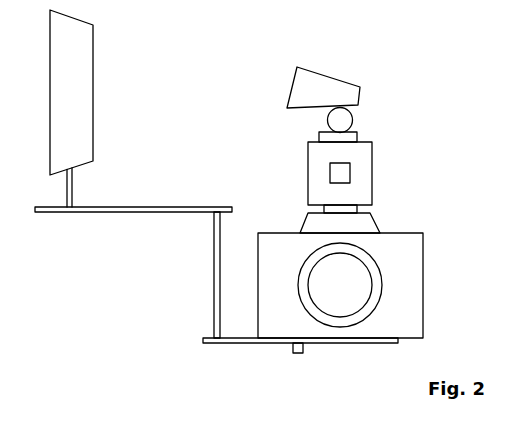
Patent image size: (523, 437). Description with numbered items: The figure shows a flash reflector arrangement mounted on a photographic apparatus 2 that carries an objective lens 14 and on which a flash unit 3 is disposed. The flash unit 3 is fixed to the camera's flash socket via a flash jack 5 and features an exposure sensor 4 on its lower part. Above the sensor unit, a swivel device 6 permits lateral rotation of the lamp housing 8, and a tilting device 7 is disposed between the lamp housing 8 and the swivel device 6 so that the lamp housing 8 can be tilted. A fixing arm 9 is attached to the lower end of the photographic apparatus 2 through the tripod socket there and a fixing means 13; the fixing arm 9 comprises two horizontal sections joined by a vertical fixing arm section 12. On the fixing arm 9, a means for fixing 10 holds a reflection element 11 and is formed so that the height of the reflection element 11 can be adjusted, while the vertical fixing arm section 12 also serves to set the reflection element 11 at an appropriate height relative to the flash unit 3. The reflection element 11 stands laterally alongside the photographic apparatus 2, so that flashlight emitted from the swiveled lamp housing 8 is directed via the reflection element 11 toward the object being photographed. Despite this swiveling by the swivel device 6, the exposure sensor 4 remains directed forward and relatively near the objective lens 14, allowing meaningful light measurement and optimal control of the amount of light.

The photographic apparatus 2 is at (413, 292).
The flash unit 3 is at (463, 170).
The exposure sensor 4 is at (342, 173).
The flash jack 5 is at (347, 209).
The swivel device 6 is at (355, 137).
The tilting device 7 is at (345, 119).
The lamp housing 8 is at (290, 87).
The fixing arm 9 is at (140, 214).
The means for fixing 10 is at (75, 180).
The reflection element 11 is at (85, 77).
The vertical fixing arm section 12 is at (214, 280).
The fixing means 13 is at (298, 355).
The objective lens 14 is at (363, 272).